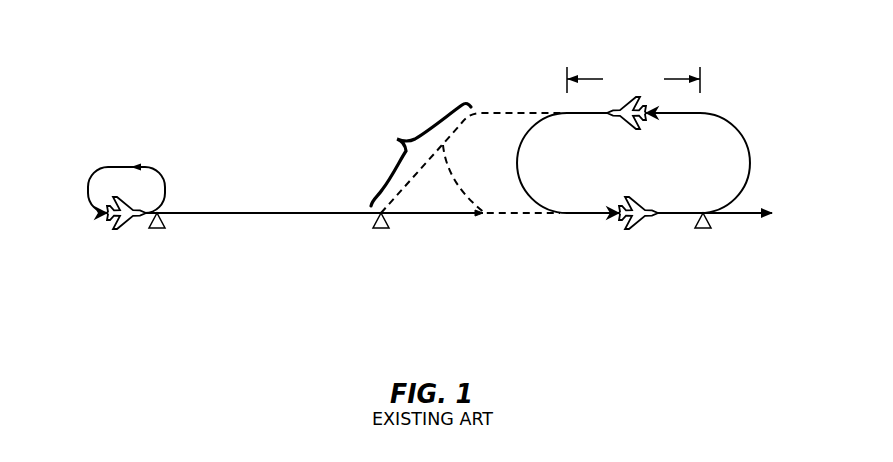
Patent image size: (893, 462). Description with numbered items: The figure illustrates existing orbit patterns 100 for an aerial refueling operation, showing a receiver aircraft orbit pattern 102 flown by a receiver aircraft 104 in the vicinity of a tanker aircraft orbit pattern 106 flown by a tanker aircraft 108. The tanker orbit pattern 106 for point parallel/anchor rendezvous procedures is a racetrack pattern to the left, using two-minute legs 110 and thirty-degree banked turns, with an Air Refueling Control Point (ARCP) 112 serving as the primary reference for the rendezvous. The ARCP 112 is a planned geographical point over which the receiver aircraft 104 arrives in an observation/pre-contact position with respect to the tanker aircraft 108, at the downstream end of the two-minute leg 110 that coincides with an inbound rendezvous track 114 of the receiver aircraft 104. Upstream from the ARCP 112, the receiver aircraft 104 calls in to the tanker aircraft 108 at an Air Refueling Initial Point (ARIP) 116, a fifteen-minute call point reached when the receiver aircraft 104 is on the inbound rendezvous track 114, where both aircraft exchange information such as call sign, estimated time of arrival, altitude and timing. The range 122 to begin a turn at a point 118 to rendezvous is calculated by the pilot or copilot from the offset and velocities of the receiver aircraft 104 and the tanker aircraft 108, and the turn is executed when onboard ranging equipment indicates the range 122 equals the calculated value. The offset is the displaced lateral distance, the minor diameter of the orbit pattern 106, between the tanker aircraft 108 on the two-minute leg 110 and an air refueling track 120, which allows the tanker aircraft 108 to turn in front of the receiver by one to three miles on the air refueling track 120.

The existing orbit patterns 100 is at (259, 28).
The receiver aircraft orbit pattern 102 is at (140, 166).
The receiver aircraft 104 is at (97, 213).
The tanker aircraft orbit pattern 106 is at (743, 136).
The tanker aircraft 108 is at (608, 213).
The 2 minute leg 110 is at (597, 79).
The Air Refueling Control Point (ARCP) 112 is at (705, 230).
The inbound rendezvous track 114 is at (407, 214).
The Air Refueling Initial Point (ARIP) 116 is at (165, 222).
The point to begin turn 118 is at (374, 220).
The air refueling track 120 is at (776, 213).
The range 122 is at (435, 126).